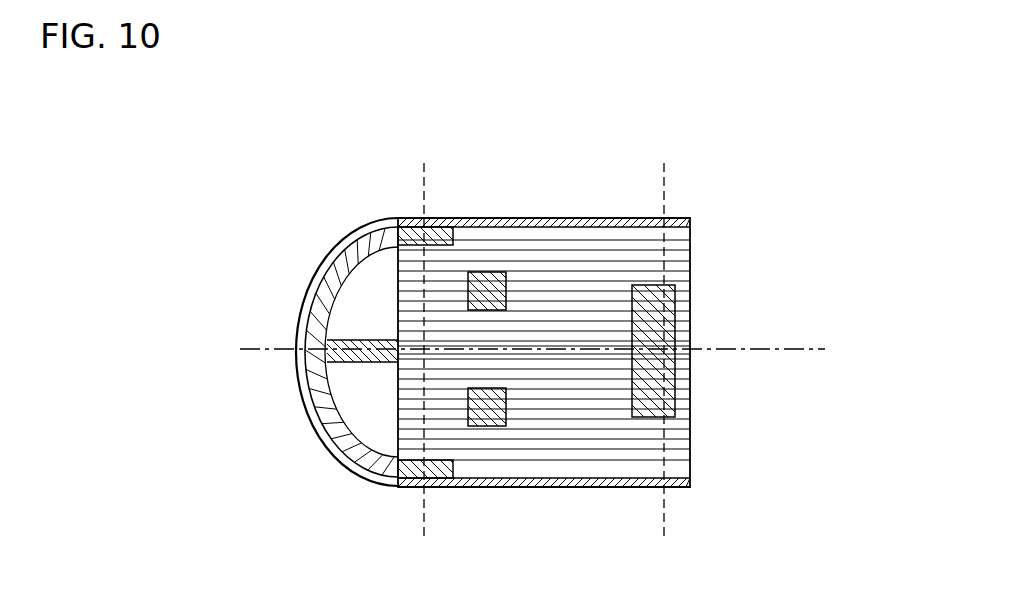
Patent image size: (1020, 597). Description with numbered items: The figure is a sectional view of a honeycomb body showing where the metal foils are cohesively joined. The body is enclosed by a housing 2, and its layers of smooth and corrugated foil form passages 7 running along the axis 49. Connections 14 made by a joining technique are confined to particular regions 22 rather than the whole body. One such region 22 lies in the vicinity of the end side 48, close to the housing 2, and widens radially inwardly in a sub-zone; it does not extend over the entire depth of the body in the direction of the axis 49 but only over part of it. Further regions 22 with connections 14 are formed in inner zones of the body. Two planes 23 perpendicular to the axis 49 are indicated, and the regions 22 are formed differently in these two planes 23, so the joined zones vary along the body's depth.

The housing 2 is at (690, 484).
The passages 7 is at (684, 253).
The connections 14 is at (692, 384).
The region 22 is at (300, 322).
The planes 23 is at (424, 172).
The end side 48 is at (362, 300).
The axis 49 is at (828, 349).